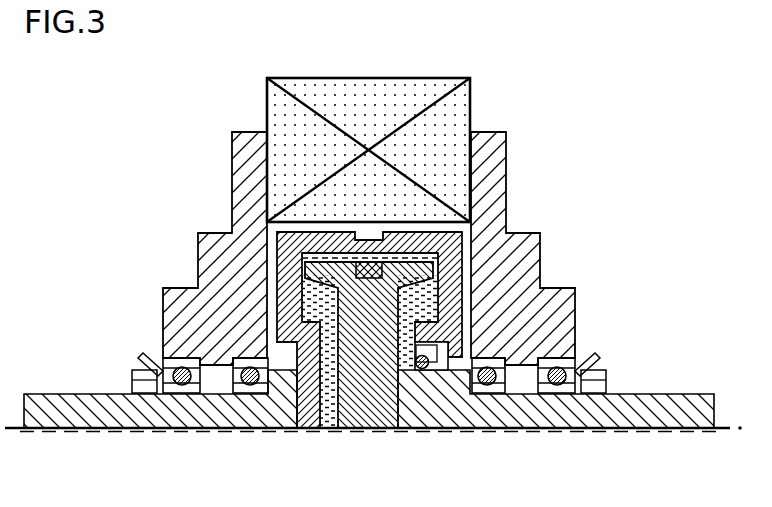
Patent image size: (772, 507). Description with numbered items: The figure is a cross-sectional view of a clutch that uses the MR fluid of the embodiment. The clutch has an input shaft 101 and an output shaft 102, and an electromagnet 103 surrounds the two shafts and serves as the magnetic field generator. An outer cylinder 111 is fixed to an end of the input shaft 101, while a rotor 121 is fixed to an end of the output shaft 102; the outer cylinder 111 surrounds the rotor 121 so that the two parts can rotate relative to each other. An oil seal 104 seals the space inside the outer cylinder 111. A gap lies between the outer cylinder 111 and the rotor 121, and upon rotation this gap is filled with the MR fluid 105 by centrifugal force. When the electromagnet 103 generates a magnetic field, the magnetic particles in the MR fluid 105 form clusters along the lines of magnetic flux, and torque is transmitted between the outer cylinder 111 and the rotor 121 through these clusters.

The input shaft 101 is at (71, 393).
The output shaft 102 is at (673, 393).
The electromagnet 103 is at (383, 78).
The oil seal 104 is at (423, 356).
The MR fluid 105 is at (331, 340).
The outer cylinder 111 is at (321, 232).
The rotor 121 is at (305, 263).